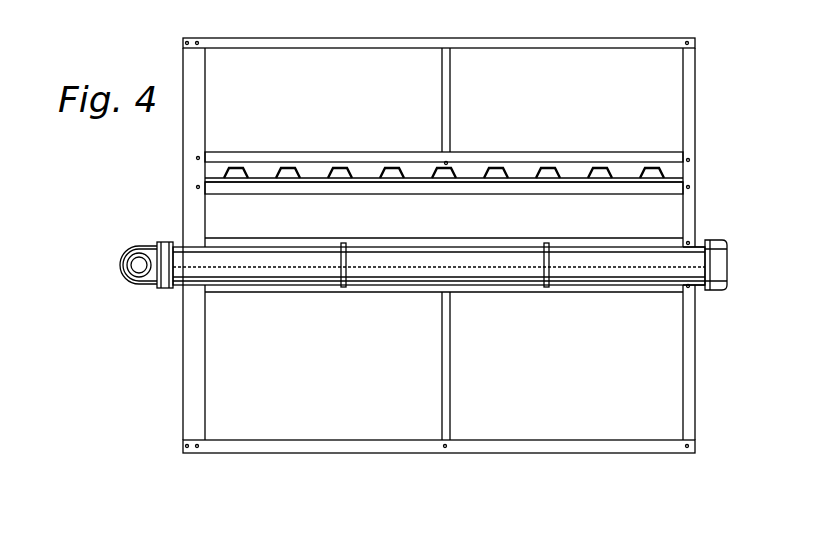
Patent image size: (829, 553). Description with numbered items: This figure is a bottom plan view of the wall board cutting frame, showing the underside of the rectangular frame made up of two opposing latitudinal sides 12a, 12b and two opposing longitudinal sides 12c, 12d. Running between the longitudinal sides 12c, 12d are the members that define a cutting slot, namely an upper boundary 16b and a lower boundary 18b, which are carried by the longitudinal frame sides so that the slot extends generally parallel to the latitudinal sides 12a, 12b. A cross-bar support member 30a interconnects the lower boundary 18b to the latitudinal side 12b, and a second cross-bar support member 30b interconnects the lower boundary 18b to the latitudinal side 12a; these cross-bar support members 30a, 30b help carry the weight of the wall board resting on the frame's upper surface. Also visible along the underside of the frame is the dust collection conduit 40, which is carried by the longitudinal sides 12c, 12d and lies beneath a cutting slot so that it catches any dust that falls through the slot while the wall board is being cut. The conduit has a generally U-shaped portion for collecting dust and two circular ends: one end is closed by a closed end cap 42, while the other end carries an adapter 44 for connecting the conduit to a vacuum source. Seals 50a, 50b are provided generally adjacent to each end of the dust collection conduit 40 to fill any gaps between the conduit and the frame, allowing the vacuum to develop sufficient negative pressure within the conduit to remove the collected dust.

The latitudinal side 12a is at (317, 38).
The latitudinal side 12b is at (352, 453).
The longitudinal side 12c is at (180, 373).
The longitudinal side 12d is at (680, 415).
The cross-bar support member 30a is at (449, 368).
The second cross-bar support member 30b is at (450, 97).
The lower boundary 18b is at (641, 152).
The upper boundary 16b is at (612, 191).
The dust collection conduit 40 is at (389, 296).
The closed end cap 42 is at (723, 284).
The adapter 44 is at (118, 265).
The seal 50a is at (698, 238).
The seal 50b is at (182, 243).